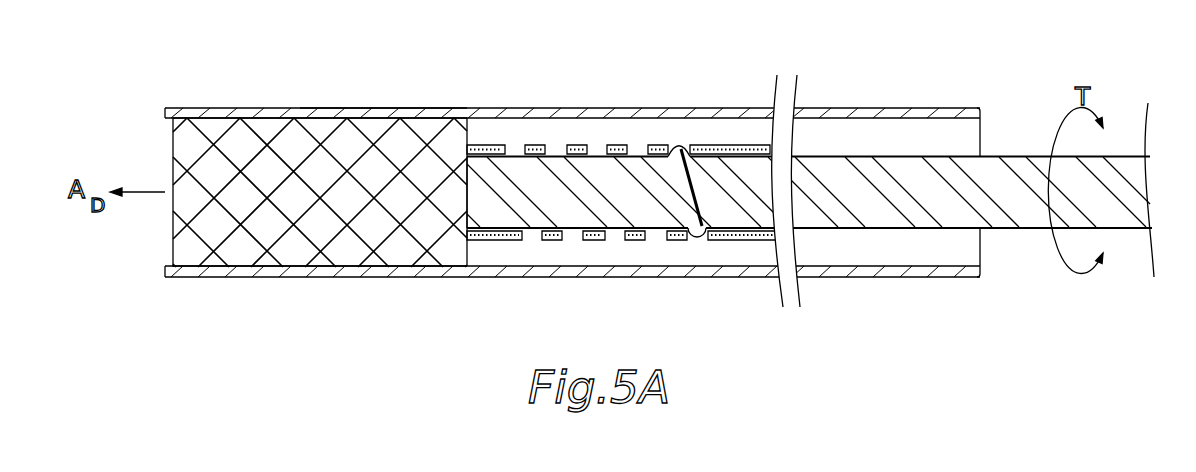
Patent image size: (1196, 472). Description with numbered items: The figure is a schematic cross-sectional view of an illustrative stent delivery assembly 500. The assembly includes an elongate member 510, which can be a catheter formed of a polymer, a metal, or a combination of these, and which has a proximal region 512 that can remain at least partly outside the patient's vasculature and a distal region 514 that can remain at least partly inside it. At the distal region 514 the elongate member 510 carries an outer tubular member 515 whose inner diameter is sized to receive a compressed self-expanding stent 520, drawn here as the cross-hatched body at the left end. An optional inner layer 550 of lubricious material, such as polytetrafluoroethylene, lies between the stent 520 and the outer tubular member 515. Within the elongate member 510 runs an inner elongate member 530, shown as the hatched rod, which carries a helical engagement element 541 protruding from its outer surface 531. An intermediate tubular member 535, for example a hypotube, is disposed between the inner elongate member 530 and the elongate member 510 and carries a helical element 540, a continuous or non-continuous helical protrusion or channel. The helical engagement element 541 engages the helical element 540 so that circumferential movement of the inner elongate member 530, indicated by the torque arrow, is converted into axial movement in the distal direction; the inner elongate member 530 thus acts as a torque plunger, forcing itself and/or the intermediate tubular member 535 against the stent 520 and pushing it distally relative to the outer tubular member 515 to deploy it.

The stent delivery assembly 500 is at (168, 68).
The elongate member 510 is at (542, 87).
The proximal region 512 is at (978, 92).
The distal region 514 is at (318, 80).
The outer tubular member 515 is at (382, 108).
The self-expanding stent 520 is at (292, 232).
The inner elongate member 530 is at (1012, 232).
The outer surface 531 is at (498, 238).
The intermediate tubular member 535 is at (728, 236).
The helical element 540 is at (615, 238).
The helical engagement element 541 is at (682, 143).
The inner layer 550 is at (215, 108).